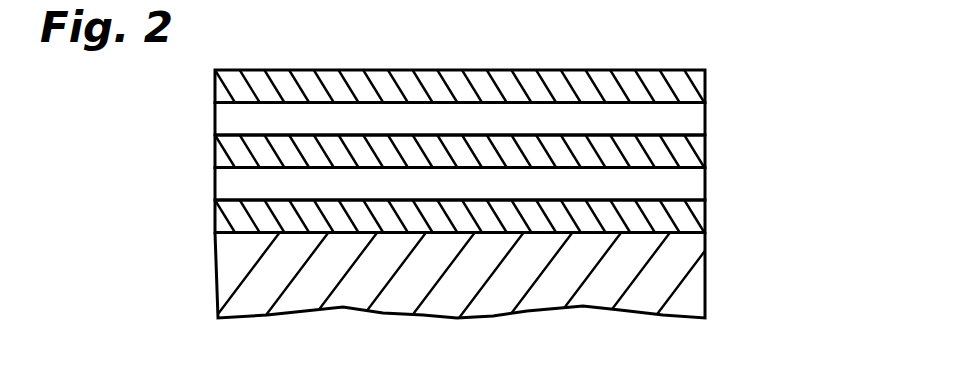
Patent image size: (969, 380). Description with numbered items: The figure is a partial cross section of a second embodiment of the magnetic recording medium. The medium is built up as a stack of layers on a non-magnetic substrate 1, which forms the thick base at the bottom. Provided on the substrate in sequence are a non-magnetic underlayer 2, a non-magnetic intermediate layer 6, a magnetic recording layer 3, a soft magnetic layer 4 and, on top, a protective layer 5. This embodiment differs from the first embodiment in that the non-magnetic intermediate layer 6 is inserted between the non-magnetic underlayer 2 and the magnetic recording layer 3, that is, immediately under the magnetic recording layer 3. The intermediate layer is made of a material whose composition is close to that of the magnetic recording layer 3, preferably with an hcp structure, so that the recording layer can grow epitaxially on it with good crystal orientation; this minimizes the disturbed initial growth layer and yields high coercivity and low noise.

The non-magnetic substrate 1 is at (698, 248).
The non-magnetic underlayer 2 is at (700, 213).
The magnetic recording layer 3 is at (700, 148).
The soft magnetic layer 4 is at (700, 118).
The protective layer 5 is at (700, 82).
The non-magnetic intermediate layer 6 is at (700, 183).